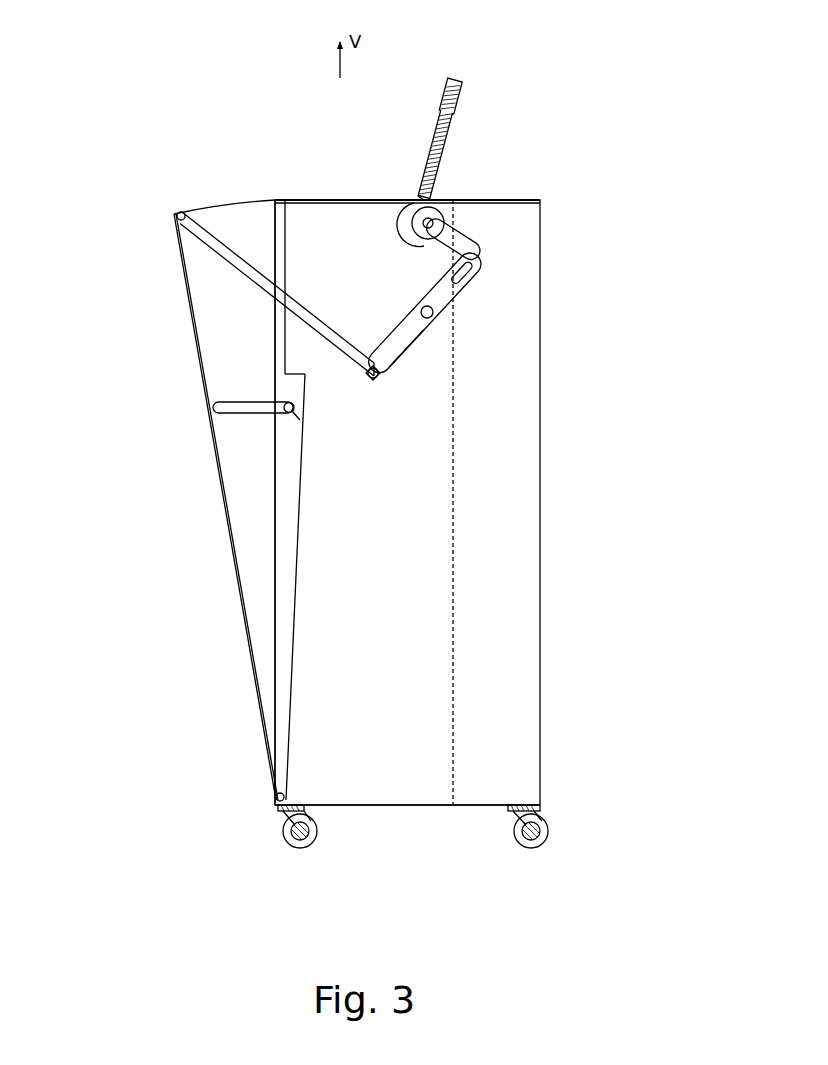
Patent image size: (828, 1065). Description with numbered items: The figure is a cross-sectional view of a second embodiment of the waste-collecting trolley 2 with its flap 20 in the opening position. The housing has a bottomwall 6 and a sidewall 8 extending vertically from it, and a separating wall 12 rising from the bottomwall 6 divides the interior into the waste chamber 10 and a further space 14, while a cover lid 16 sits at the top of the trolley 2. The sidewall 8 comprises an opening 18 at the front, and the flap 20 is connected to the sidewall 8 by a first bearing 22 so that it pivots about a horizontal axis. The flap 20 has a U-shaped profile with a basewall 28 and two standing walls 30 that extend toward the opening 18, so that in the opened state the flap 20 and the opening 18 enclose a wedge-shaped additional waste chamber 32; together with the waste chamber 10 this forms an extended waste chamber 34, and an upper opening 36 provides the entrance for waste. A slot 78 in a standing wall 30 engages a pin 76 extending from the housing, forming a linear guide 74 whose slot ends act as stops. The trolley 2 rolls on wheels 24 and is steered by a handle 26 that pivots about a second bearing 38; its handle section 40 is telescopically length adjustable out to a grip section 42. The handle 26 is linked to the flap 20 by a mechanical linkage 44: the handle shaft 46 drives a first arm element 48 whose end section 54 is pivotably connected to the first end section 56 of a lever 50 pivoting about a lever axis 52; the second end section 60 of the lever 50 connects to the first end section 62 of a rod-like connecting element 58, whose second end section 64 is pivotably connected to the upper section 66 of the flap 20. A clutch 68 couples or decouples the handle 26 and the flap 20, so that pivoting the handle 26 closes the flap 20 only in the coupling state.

The trolley 2 is at (447, 446).
The bottomwall 6 is at (405, 813).
The sidewall 8 is at (562, 560).
The waste chamber 10 is at (388, 660).
The separating wall 12 is at (467, 664).
The further space 14 is at (508, 488).
The cover lid 16 is at (299, 192).
The opening 18 is at (287, 548).
The flap 20 is at (212, 545).
The first bearing 22 is at (275, 801).
The wheels 24 is at (300, 855).
The handle 26 is at (443, 102).
The basewall 28 is at (185, 461).
The standing walls 30 is at (249, 641).
The additional waste chamber 32 is at (255, 460).
The extended waste chamber 34 is at (321, 715).
The upper opening 36 is at (222, 195).
The second bearing 38 is at (504, 225).
The handle section 40 is at (405, 102).
The grip section 42 is at (451, 77).
The mechanical linkage 44 is at (487, 339).
The handle shaft 46 is at (445, 220).
The first arm element 48 is at (459, 238).
The lever 50 is at (487, 339).
The lever axis 52 is at (439, 312).
The end section of the first arm element 54 is at (530, 273).
The first end section of the lever 56 is at (483, 263).
The connecting element 58 is at (278, 319).
The second end section of the lever 60 is at (409, 364).
The first end section of the connecting element 62 is at (370, 380).
The second end section of the connecting element 64 is at (203, 213).
The upper section of the flap 66 is at (184, 507).
The clutch 68 is at (441, 198).
The linear guide 74 is at (279, 389).
The pin 76 is at (302, 421).
The slot 78 is at (232, 402).